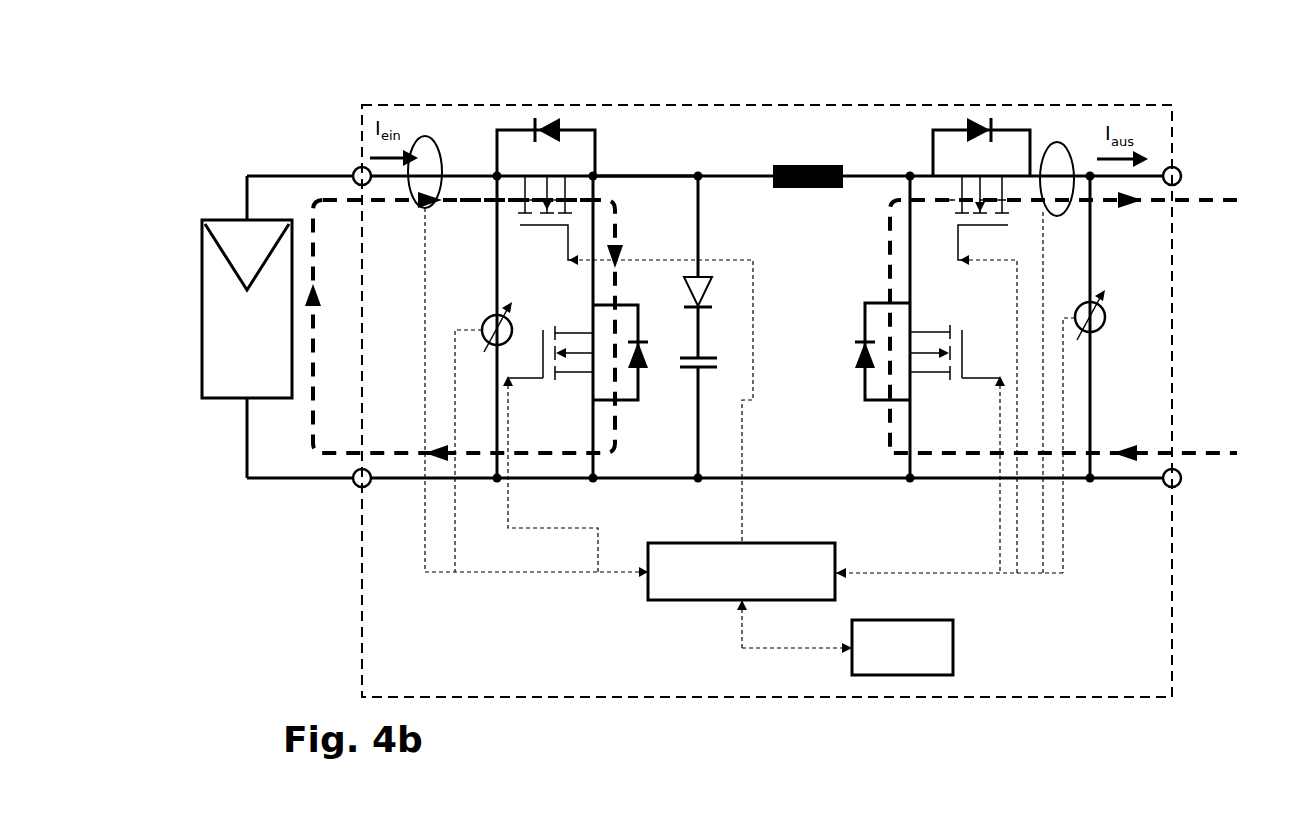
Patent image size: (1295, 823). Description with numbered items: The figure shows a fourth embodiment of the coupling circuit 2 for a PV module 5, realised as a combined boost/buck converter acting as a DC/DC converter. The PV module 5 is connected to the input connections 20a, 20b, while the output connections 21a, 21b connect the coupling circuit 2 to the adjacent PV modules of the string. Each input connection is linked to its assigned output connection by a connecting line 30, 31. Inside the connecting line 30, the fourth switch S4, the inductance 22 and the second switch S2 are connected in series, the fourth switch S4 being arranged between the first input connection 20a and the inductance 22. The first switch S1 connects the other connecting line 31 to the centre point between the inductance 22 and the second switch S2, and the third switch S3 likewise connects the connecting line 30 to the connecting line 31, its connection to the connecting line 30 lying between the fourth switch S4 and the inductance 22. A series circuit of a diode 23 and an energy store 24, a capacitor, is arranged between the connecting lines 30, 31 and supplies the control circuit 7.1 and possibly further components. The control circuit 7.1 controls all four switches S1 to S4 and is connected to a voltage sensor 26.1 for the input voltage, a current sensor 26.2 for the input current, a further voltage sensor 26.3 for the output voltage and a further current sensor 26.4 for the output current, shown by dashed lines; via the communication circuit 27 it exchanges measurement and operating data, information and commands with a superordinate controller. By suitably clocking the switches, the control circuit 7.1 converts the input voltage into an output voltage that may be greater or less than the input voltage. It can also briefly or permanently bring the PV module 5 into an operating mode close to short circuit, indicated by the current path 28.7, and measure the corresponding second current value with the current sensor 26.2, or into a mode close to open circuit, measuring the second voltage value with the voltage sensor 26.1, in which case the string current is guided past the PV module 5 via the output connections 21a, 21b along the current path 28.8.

The coupling circuit 2 is at (356, 102).
The PV module 5 is at (230, 220).
The first input connection 20a is at (355, 170).
The input connection 20b is at (355, 485).
The output connection 21a is at (1180, 168).
The output connection 21b is at (1180, 485).
The inductance 22 is at (808, 165).
The diode 23 is at (707, 290).
The energy store 24 is at (717, 359).
The voltage sensor 26.1 is at (487, 318).
The current sensor 26.2 is at (423, 136).
The further voltage sensor 26.3 is at (1107, 318).
The further current sensor 26.4 is at (1068, 150).
The communication circuit 27 is at (847, 647).
The current path 28.7 is at (460, 197).
The current path 28.8 is at (1148, 455).
The connecting line 30 is at (645, 175).
The connecting line 31 is at (437, 480).
The control circuit 7.1 is at (855, 595).
The first switch S1 is at (953, 397).
The second switch S2 is at (945, 208).
The third switch S3 is at (571, 387).
The fourth switch S4 is at (567, 160).